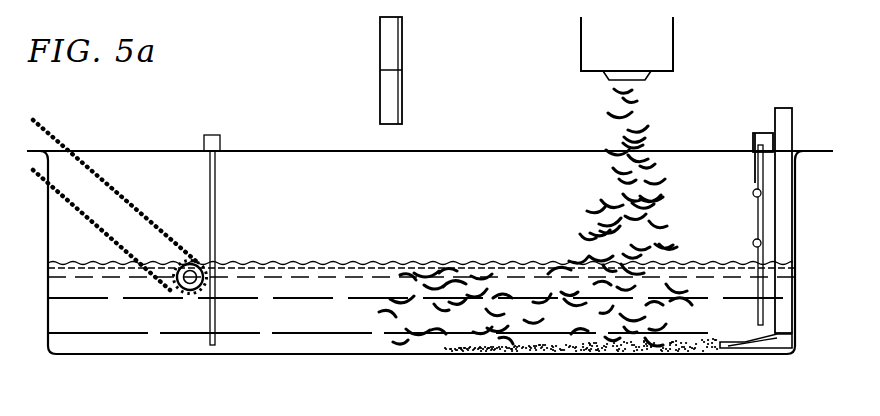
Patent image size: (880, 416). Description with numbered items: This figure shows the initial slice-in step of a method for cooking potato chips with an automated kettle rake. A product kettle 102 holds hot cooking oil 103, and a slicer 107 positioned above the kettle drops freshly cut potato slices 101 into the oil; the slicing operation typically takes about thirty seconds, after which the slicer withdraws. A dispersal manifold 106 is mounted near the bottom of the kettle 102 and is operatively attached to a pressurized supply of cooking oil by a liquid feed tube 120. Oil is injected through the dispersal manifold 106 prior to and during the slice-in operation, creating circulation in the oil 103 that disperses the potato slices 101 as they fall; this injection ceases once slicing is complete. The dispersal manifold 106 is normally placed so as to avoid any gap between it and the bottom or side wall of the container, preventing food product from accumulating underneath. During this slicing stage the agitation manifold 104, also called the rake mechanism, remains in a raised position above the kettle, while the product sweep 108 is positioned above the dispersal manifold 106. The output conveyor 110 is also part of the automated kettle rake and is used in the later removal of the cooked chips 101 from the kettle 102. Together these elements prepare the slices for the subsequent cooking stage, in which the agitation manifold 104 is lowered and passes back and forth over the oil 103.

The potato slices 101 is at (545, 250).
The product kettle 102 is at (488, 150).
The cooking oil 103 is at (356, 328).
The agitation manifold 104 is at (377, 92).
The dispersal manifold 106 is at (752, 349).
The slicer 107 is at (674, 47).
The product sweep 108 is at (753, 220).
The output conveyor 110 is at (158, 222).
The liquid feed tube 120 is at (793, 125).